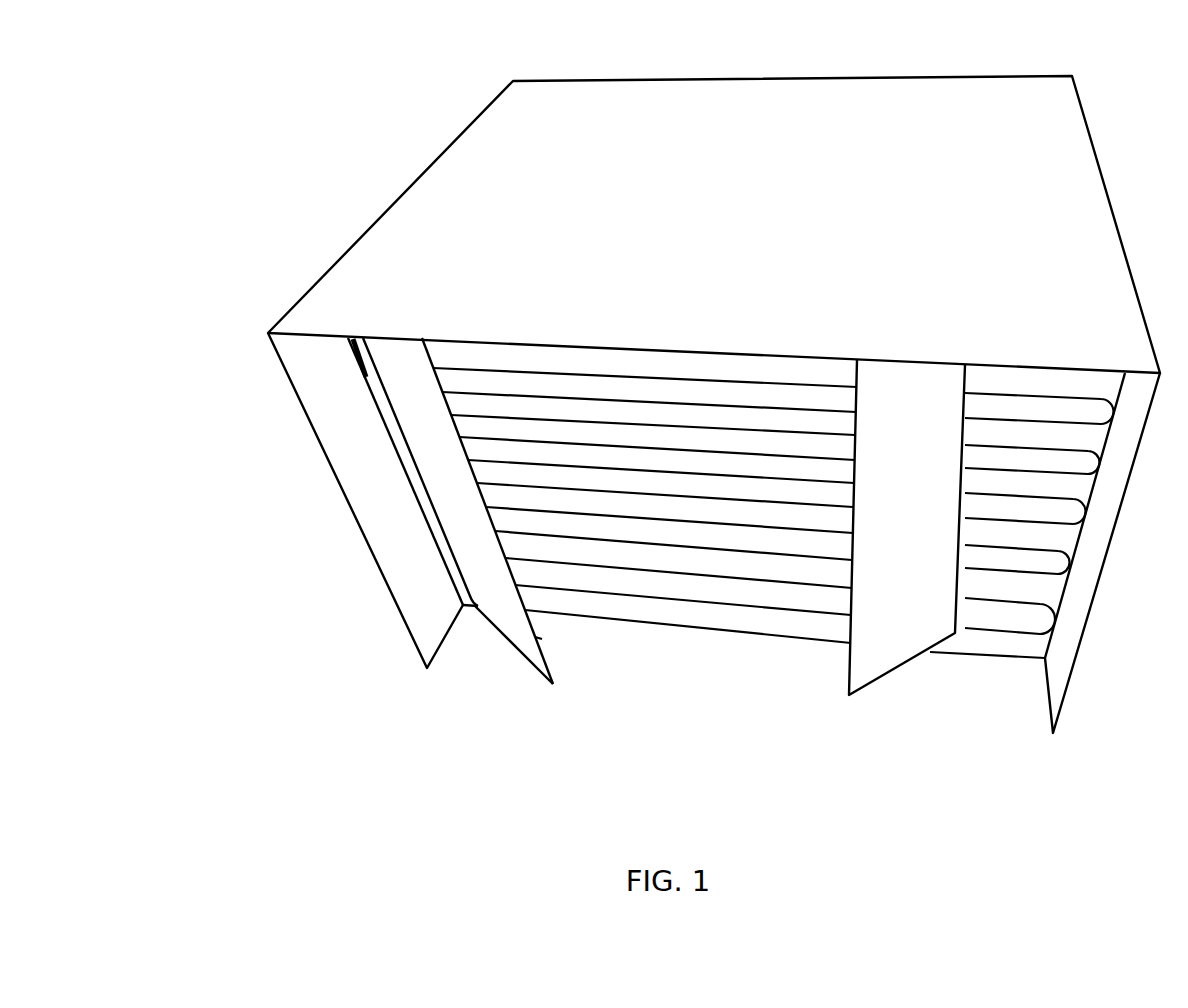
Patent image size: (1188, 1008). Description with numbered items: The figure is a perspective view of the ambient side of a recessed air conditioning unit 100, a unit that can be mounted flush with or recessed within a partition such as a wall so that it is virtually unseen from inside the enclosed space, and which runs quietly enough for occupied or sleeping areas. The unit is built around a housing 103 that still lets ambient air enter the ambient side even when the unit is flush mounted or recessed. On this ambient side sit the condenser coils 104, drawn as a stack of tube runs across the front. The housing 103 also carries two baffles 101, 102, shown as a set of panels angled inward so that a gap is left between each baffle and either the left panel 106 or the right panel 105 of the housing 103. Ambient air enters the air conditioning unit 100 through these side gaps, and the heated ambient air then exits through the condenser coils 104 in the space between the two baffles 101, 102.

The air conditioning unit 100 is at (326, 146).
The baffle 101 is at (522, 630).
The baffle 102 is at (887, 655).
The housing 103 is at (880, 108).
The condenser coils 104 is at (682, 588).
The right panel 105 is at (1095, 600).
The left panel 106 is at (365, 543).